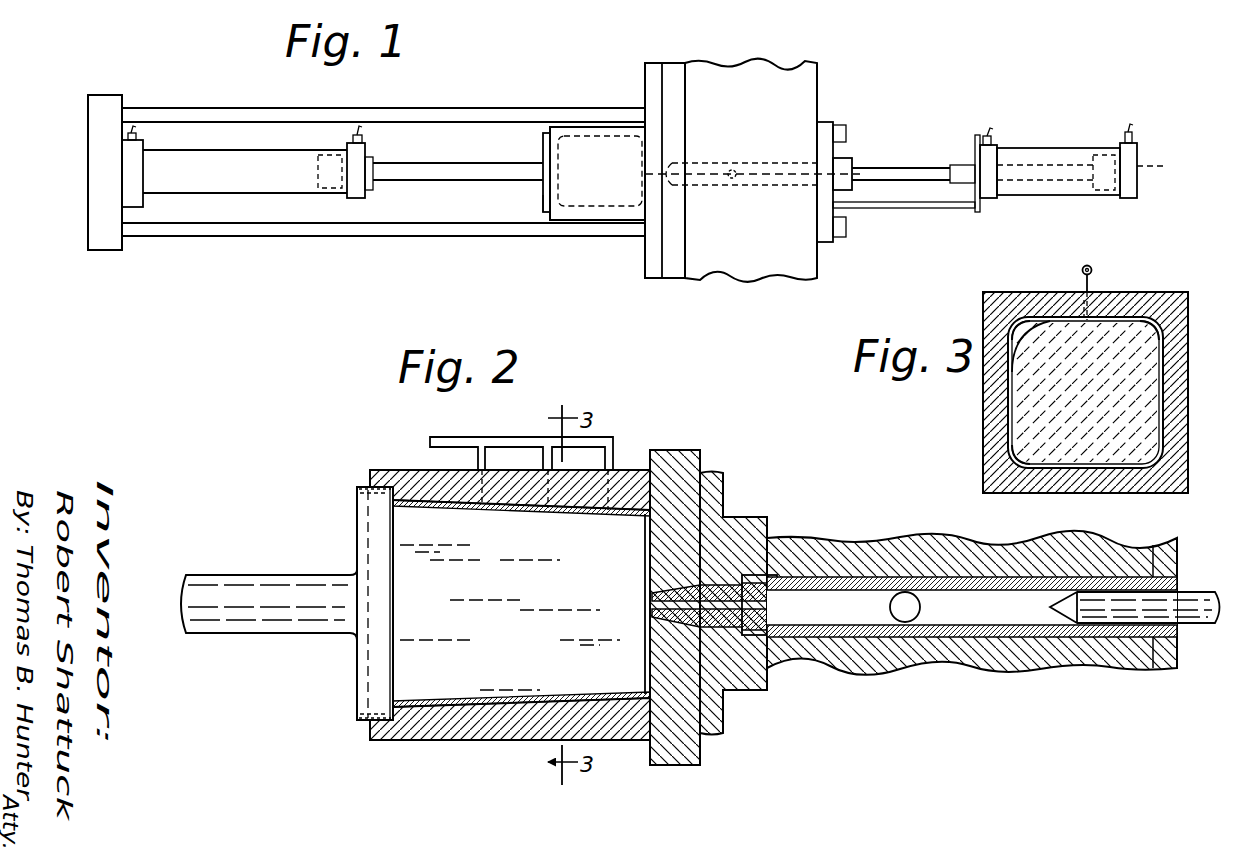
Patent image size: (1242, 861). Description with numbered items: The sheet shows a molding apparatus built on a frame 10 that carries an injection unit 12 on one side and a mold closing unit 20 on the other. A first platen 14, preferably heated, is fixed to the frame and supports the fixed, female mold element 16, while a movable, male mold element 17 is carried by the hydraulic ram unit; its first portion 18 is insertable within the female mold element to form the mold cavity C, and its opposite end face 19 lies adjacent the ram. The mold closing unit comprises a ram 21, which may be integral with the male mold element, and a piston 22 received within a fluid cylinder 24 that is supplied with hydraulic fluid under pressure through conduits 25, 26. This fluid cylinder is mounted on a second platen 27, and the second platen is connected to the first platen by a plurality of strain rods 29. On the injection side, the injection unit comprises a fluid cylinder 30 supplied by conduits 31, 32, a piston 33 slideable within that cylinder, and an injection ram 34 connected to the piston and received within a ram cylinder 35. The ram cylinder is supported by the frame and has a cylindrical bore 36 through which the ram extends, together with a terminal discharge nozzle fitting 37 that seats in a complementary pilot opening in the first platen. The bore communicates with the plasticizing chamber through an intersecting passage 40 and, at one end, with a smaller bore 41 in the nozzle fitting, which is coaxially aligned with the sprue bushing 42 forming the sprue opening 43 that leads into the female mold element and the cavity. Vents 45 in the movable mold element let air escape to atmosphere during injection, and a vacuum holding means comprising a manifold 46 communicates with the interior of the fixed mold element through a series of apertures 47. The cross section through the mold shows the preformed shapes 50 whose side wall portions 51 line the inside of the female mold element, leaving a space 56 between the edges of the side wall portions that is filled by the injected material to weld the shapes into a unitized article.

In FIG. 1, the frame 10 is at (822, 91).
In FIG. 2, the frame 10 is at (1098, 671).
In FIG. 1, the injection unit 12 is at (1062, 147).
In FIG. 1, the first platen 14 is at (646, 266).
In FIG. 2, the first platen 14 is at (684, 766).
In FIG. 1, the fixed female mold element 16 is at (598, 131).
In FIG. 2, the fixed female mold element 16 is at (450, 742).
In FIG. 3, the fixed female mold element 16 is at (1190, 392).
In FIG. 1, the movable male mold element 17 is at (541, 146).
In FIG. 2, the movable male mold element 17 is at (355, 528).
In FIG. 1, the first portion of male mold element 18 is at (576, 208).
In FIG. 2, the first portion of male mold element 18 is at (497, 609).
In FIG. 3, the first portion of male mold element 18 is at (1095, 420).
In FIG. 1, the ram end face 19 is at (543, 200).
In FIG. 2, the ram end face 19 is at (357, 697).
In FIG. 1, the hydraulic ram unit 20 is at (330, 205).
In FIG. 1, the ram 21 is at (437, 177).
In FIG. 2, the ram 21 is at (233, 624).
In FIG. 1, the piston 22 is at (317, 175).
In FIG. 1, the fluid cylinder 24 is at (270, 158).
In FIG. 1, the conduit 25 is at (140, 130).
In FIG. 1, the conduit 26 is at (365, 132).
In FIG. 1, the second platen 27 is at (90, 135).
In FIG. 1, the strain rods 29 is at (485, 108).
In FIG. 1, the fluid cylinder 30 is at (1050, 196).
In FIG. 1, the conduit 31 is at (992, 131).
In FIG. 1, the conduit 32 is at (1135, 130).
In FIG. 1, the piston 33 is at (1167, 162).
In FIG. 1, the injection ram 34 is at (903, 170).
In FIG. 2, the injection ram 34 is at (1195, 626).
In FIG. 1, the ram cylinder 35 is at (853, 156).
In FIG. 2, the ram cylinder 35 is at (1186, 578).
In FIG. 2, the cylindrical bore 36 is at (1010, 623).
In FIG. 2, the discharge nozzle fitting 37 is at (736, 676).
In FIG. 2, the intersecting passage 40 is at (898, 619).
In FIG. 2, the smaller bore 41 is at (774, 578).
In FIG. 2, the sprue bushing 42 is at (688, 599).
In FIG. 2, the sprue opening 43 is at (688, 611).
In FIG. 2, the vents 45 is at (360, 487).
In FIG. 2, the manifold 46 is at (440, 440).
In FIG. 3, the manifold 46 is at (1092, 270).
In FIG. 2, the apertures 47 is at (540, 509).
In FIG. 3, the apertures 47 is at (1083, 300).
In FIG. 3, the preformed shapes 50 is at (1167, 360).
In FIG. 3, the side wall portions 51 is at (1068, 320).
In FIG. 3, the space 56 is at (1013, 330).
In FIG. 2, the mold cavity C is at (497, 700).